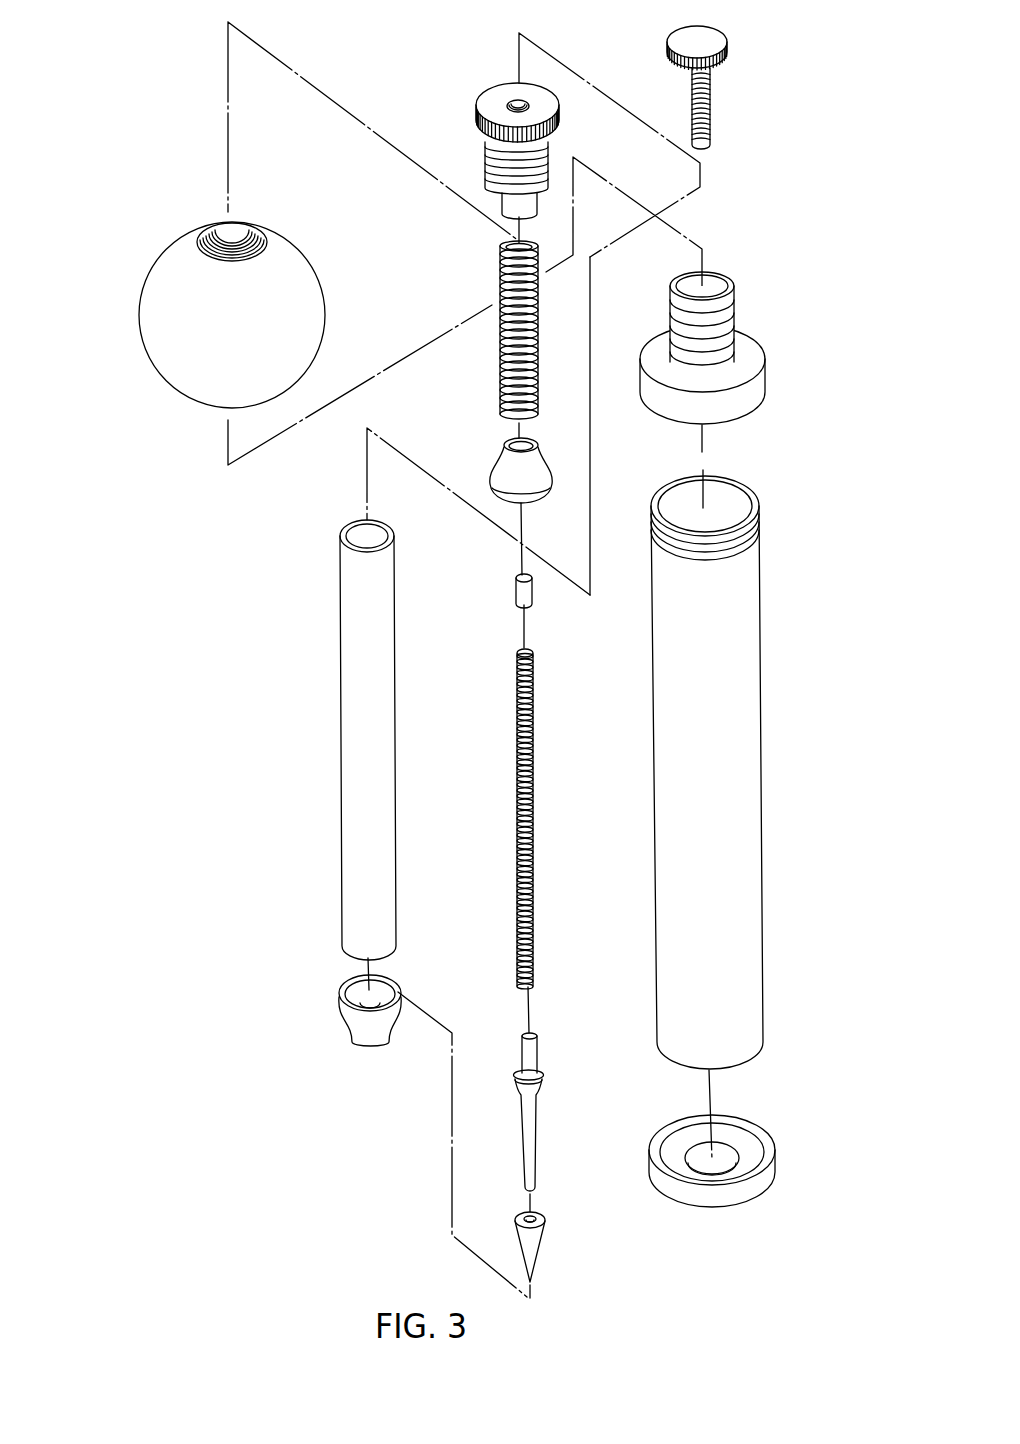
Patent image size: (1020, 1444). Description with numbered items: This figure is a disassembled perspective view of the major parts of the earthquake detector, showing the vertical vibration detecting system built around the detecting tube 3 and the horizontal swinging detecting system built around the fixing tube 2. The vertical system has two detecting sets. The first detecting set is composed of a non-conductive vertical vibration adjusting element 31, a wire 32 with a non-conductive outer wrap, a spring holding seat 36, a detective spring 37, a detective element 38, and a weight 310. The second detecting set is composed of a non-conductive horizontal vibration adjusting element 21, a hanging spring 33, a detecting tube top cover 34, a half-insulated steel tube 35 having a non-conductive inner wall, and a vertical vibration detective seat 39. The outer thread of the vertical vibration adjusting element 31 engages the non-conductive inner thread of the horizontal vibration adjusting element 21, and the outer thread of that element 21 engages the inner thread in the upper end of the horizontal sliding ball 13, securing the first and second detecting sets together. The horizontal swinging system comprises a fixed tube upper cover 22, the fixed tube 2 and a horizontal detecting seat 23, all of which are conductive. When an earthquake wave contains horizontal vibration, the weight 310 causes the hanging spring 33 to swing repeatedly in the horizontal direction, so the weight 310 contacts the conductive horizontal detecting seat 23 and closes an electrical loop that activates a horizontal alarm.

The fixing tube 2 is at (740, 690).
The detecting tube 3 is at (337, 545).
The horizontal sliding ball 13 is at (170, 298).
The horizontal vibration adjusting element 21 is at (488, 107).
The fixed tube upper cover 22 is at (748, 340).
The horizontal detecting seat 23 is at (755, 1131).
The vertical vibration adjusting element 31 is at (718, 40).
The wire 32 is at (590, 343).
The hanging spring 33 is at (508, 336).
The detecting tube top cover 34 is at (503, 470).
The half-insulated steel tube 35 is at (385, 759).
The spring holding seat 36 is at (514, 586).
The detective spring 37 is at (518, 789).
The detective element 38 is at (530, 1127).
The vertical vibration detective seat 39 is at (358, 1018).
The weight 310 is at (533, 1242).